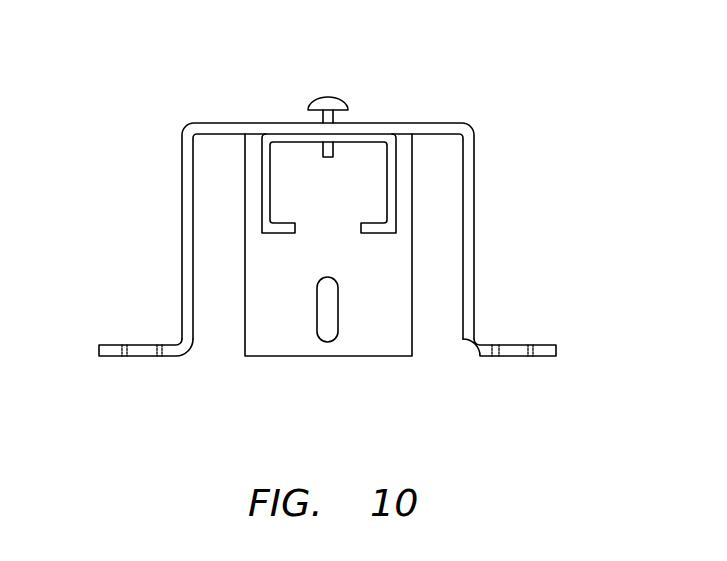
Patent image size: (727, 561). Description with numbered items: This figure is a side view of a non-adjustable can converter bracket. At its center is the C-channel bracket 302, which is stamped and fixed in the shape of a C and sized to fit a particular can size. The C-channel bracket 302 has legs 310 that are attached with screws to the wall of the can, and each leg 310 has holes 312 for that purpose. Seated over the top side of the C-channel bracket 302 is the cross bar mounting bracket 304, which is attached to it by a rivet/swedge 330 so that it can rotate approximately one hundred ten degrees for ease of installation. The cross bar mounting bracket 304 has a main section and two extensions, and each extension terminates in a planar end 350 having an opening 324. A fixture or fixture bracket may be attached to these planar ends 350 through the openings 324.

The C-channel bracket 302 is at (261, 193).
The cross bar mounting bracket 304 is at (181, 252).
The legs 310 is at (372, 343).
The holes 312 is at (323, 327).
The opening 324 is at (138, 360).
The rivet/swedge 330 is at (327, 96).
The planar end 350 is at (112, 344).